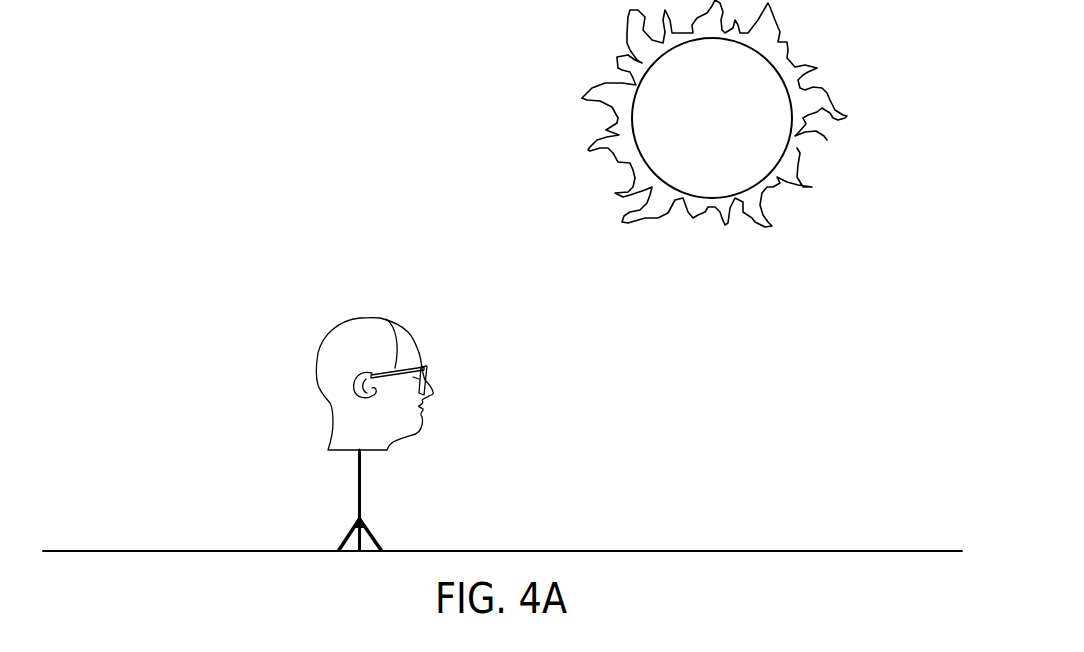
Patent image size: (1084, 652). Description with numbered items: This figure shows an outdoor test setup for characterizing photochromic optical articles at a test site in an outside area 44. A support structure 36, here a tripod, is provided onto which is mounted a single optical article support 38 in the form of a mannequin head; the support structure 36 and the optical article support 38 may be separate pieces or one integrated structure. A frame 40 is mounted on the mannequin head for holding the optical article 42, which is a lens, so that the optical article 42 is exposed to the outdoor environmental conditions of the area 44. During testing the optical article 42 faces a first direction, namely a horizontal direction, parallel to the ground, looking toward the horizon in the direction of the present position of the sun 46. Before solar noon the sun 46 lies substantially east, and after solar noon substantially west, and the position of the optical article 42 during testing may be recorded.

The support structure 36 is at (362, 490).
The optical article support 38 is at (318, 344).
The frame 40 is at (386, 318).
The optical article 42 is at (431, 380).
The area 44 is at (699, 370).
The sun 46 is at (797, 140).